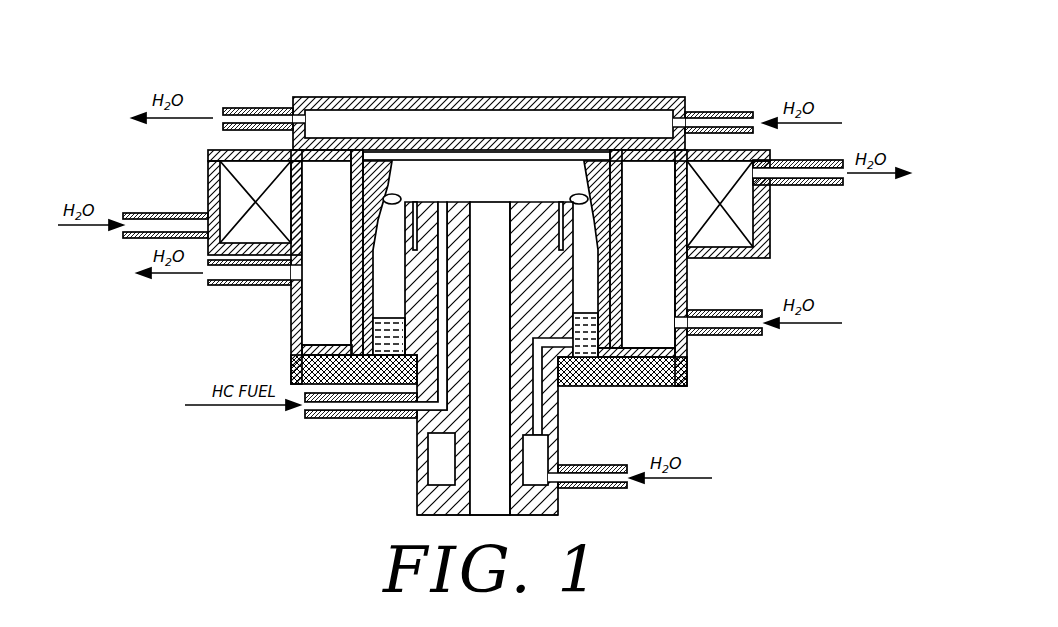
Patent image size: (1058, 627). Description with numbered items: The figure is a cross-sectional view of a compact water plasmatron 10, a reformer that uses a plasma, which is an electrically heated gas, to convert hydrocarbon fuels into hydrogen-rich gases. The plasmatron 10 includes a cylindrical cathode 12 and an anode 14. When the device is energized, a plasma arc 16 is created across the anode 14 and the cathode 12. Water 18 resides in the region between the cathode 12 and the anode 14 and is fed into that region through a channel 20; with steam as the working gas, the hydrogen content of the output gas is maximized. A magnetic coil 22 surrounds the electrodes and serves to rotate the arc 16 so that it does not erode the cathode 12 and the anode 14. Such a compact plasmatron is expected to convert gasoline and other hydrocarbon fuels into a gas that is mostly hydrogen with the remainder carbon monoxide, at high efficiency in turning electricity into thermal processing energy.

The plasmatron 10 is at (487, 178).
The cylindrical cathode 12 is at (658, 193).
The anode 14 is at (541, 215).
The plasma arc 16 is at (398, 195).
The water 18 is at (601, 322).
The channel 20 is at (537, 402).
The magnetic coil 22 is at (742, 215).